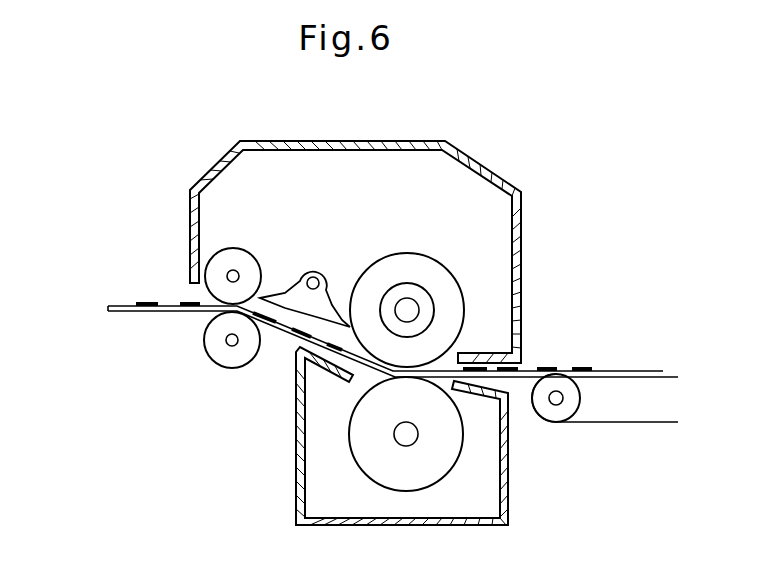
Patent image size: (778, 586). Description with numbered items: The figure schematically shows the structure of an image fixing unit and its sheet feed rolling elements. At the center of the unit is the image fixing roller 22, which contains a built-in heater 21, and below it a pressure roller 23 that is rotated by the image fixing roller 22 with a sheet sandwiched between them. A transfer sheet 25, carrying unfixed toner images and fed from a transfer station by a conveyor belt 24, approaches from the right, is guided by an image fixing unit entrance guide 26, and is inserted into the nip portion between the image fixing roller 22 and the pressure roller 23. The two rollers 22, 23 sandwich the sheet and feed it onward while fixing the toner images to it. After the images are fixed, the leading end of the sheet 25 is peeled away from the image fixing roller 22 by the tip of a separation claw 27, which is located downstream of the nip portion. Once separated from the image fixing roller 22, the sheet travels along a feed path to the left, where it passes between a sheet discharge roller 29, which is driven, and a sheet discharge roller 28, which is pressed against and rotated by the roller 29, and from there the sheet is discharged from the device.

The heater 21 is at (428, 306).
The image fixing roller 22 is at (440, 268).
The pressure roller 23 is at (357, 441).
The conveyor belt 24 is at (670, 378).
The transfer sheet 25 is at (610, 367).
The image fixing unit entrance guide 26 is at (513, 396).
The separation claw 27 is at (297, 281).
The sheet discharge roller 28 is at (218, 272).
The sheet discharge roller 29 is at (213, 346).